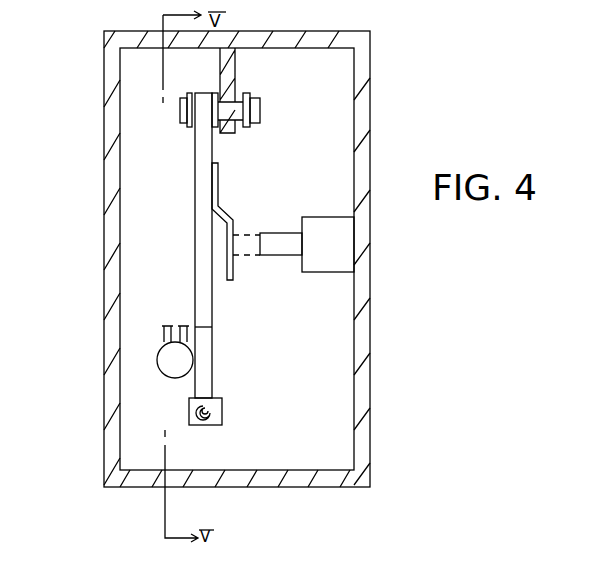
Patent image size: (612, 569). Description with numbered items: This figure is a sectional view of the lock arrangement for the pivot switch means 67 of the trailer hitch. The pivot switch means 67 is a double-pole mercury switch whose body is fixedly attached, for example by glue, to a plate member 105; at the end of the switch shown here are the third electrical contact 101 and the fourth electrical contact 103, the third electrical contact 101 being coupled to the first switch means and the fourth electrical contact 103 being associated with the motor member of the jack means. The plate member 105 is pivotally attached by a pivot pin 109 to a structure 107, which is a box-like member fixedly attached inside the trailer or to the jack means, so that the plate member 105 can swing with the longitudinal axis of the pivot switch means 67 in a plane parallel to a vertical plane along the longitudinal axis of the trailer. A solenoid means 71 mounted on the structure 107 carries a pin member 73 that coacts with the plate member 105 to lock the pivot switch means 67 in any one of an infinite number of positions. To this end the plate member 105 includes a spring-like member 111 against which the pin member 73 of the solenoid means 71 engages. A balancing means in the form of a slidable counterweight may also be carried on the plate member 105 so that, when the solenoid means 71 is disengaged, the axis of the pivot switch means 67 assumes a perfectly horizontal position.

The pivot switch means 67 is at (142, 324).
The solenoid means 71 is at (320, 217).
The pin member 73 is at (285, 248).
The third electrical contact 101 is at (165, 339).
The fourth electrical contact 103 is at (179, 325).
The plate member 105 is at (195, 198).
The structure 107 is at (357, 72).
The pivot pin 109 is at (181, 116).
The spring-like member 111 is at (235, 270).